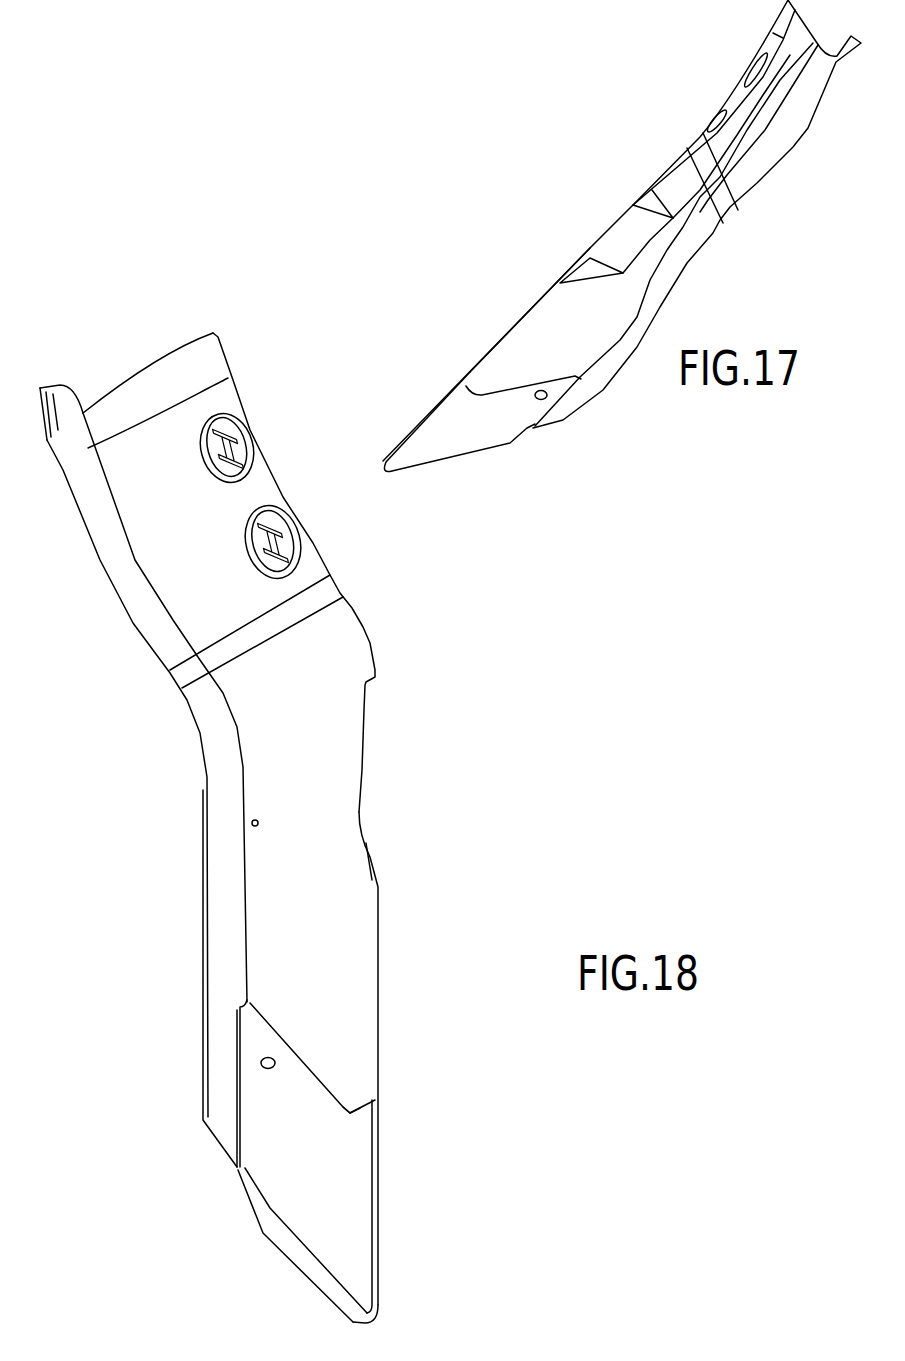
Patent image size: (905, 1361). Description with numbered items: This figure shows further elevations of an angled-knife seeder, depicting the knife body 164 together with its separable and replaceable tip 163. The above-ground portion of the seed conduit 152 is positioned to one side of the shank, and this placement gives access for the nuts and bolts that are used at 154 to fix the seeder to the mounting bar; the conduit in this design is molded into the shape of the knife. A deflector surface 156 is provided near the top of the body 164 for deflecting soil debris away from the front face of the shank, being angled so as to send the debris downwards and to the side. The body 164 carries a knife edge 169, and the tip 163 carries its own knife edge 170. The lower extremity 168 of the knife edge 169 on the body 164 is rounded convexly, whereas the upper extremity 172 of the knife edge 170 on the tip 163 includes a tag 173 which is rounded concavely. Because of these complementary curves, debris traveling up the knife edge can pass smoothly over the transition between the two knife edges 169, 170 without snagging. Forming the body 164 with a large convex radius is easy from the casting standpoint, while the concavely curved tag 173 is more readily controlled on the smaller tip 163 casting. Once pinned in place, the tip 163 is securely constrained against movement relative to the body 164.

In FIG. 17, the seed conduit 152 is at (783, 140).
In FIG. 18, the seed conduit 152 is at (217, 1087).
In FIG. 17, the nuts and bolts location 154 is at (712, 117).
In FIG. 18, the deflector surface 156 is at (363, 770).
In FIG. 18, the tip 163 is at (273, 1182).
In FIG. 18, the body 164 is at (338, 948).
In FIG. 18, the lower extremity 168 is at (365, 1087).
In FIG. 17, the knife edge 169 is at (523, 317).
In FIG. 18, the knife edge 169 is at (377, 970).
In FIG. 17, the knife edge 170 is at (403, 440).
In FIG. 18, the knife edge 170 is at (377, 1233).
In FIG. 18, the upper extremity 172 is at (377, 1128).
In FIG. 18, the tag 173 is at (340, 1092).